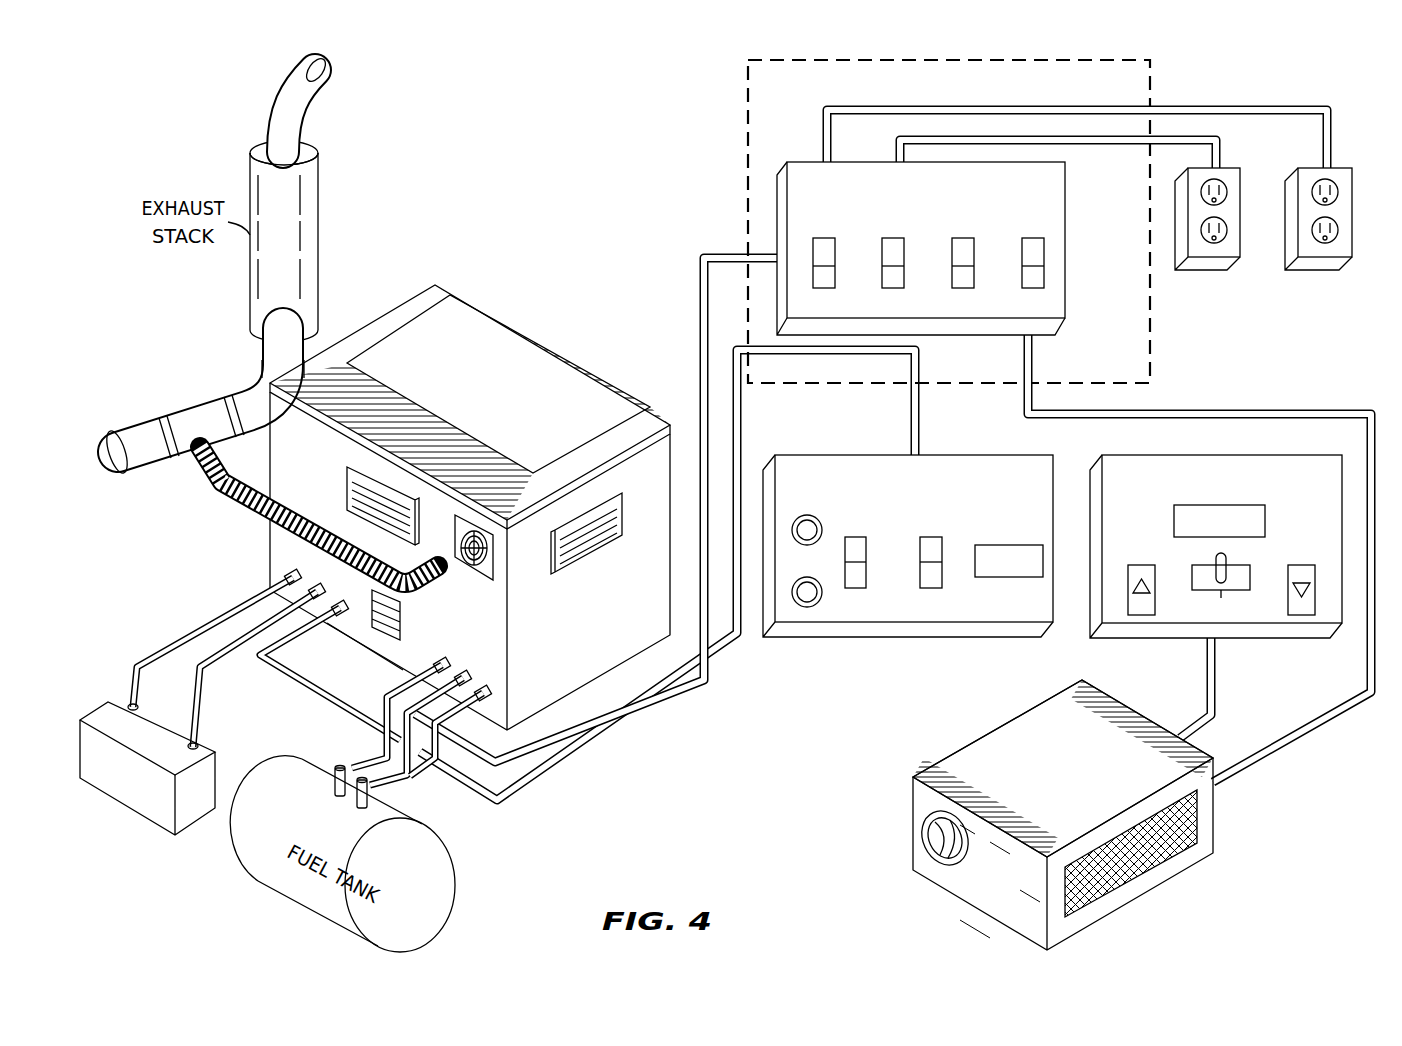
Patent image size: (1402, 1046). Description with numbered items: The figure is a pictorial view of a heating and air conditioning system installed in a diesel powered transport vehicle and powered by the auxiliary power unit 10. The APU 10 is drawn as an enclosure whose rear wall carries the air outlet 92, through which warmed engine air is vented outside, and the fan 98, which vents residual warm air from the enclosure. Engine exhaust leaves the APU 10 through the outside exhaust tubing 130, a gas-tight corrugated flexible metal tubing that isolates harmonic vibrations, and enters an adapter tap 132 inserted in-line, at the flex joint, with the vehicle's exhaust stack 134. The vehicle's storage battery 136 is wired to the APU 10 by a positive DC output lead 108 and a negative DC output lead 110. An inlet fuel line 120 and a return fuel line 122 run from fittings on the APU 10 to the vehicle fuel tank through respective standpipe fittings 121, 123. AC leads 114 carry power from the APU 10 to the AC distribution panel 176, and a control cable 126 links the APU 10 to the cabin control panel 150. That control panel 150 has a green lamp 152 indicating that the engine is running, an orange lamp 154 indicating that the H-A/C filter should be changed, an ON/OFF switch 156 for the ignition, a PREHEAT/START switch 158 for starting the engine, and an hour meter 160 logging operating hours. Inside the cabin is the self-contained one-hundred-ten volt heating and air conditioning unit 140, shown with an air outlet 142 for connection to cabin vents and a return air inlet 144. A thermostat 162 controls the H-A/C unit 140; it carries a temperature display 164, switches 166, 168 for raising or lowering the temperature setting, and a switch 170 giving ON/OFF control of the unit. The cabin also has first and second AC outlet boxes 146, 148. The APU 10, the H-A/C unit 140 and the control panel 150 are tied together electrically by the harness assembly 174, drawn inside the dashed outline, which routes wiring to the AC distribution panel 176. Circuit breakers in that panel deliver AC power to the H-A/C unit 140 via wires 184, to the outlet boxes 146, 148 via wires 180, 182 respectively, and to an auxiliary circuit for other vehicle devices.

The auxiliary power unit 10 is at (526, 326).
The air outlet 92 is at (345, 485).
The fan 98 is at (470, 582).
The positive DC output lead 108 is at (205, 627).
The negative DC output lead 110 is at (218, 660).
The AC leads 114 is at (618, 748).
The inlet fuel line 120 is at (383, 686).
The standpipe fitting 121 is at (333, 780).
The return fuel line 122 is at (415, 780).
The standpipe fitting 123 is at (357, 806).
The control cable 126 is at (729, 640).
The outside exhaust tubing 130 is at (245, 508).
The adapter tap 132 is at (192, 406).
The exhaust stack 134 is at (262, 366).
The storage battery 136 is at (128, 812).
The heating and air conditioning unit 140 is at (989, 815).
The air outlet 142 is at (925, 848).
The return air inlet 144 is at (1150, 872).
The first AC outlet box 146 is at (1205, 272).
The second AC outlet box 148 is at (1318, 272).
The control panel 150 is at (908, 575).
The green lamp 152 is at (805, 514).
The orange lamp 154 is at (806, 608).
The ON/OFF switch 156 is at (868, 592).
The PREHEAT/START switch 158 is at (945, 548).
The hour meter 160 is at (1010, 580).
The thermostat 162 is at (1216, 596).
The temperature display 164 is at (1265, 520).
The switch 166 is at (1140, 615).
The switch 168 is at (1302, 615).
The switch 170 is at (1190, 575).
The harness assembly 174 is at (748, 106).
The AC distribution panel 176 is at (1067, 245).
The wires 180 is at (1228, 160).
The wires 182 is at (1340, 148).
The wires 184 is at (1250, 412).